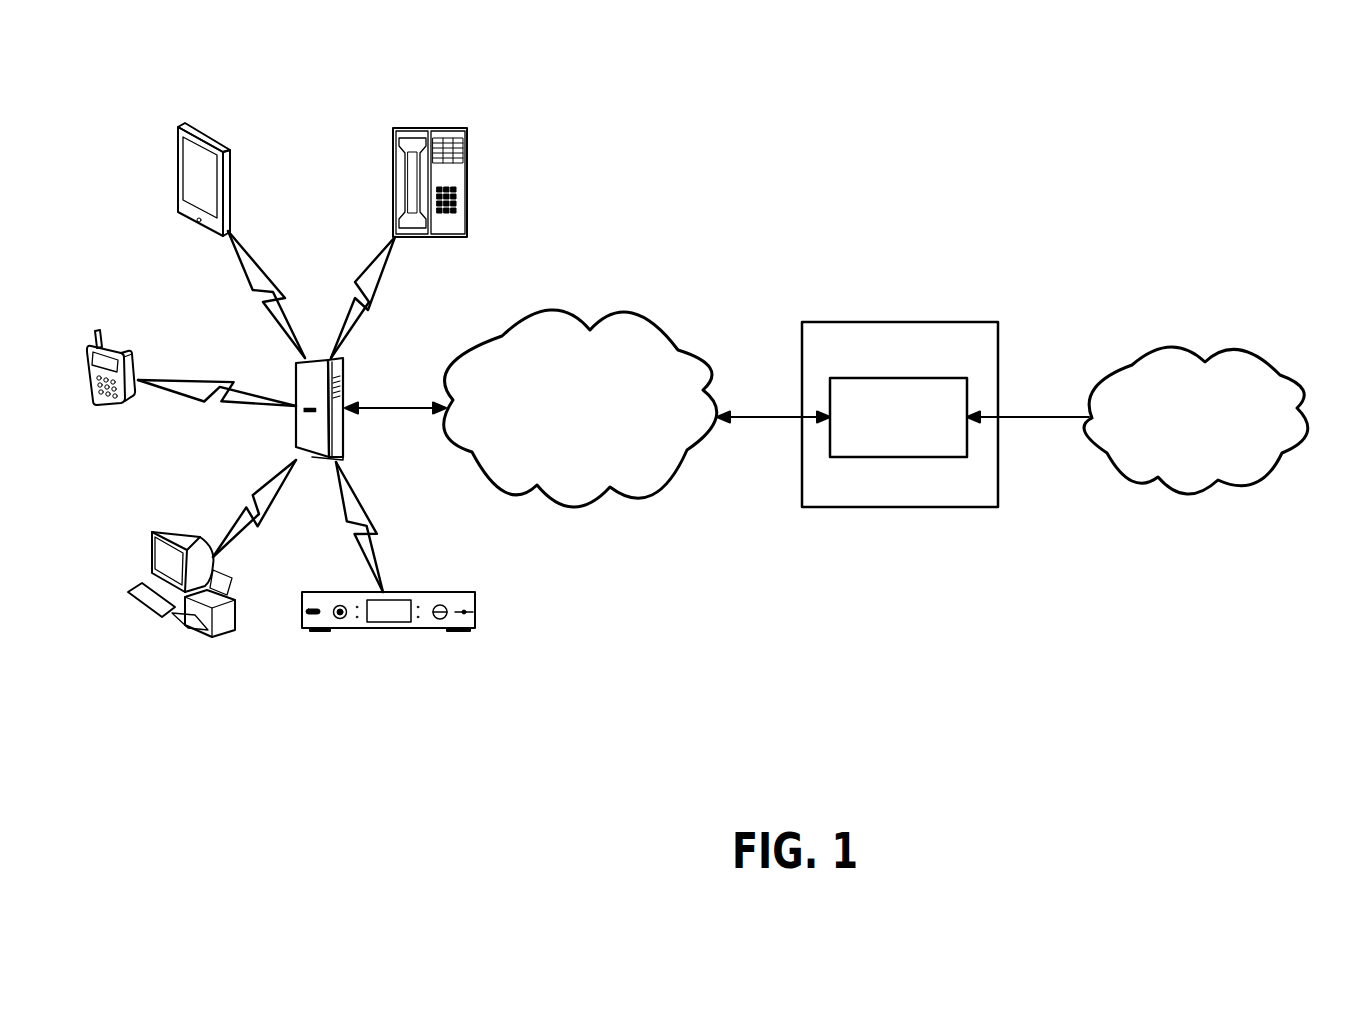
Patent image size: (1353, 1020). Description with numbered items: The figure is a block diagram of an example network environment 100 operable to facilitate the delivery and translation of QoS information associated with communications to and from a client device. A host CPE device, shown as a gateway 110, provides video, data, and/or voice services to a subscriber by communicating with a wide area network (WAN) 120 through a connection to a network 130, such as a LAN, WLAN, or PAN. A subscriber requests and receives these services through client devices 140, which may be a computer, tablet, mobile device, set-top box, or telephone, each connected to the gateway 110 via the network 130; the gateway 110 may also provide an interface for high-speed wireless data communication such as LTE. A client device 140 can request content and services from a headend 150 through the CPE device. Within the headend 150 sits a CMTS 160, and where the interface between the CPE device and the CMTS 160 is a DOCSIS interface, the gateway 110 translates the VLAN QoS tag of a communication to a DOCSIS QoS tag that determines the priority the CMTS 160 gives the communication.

The network environment 100 is at (1183, 686).
The gateway 110 is at (343, 358).
The wide area network (WAN) 120 is at (1122, 482).
The network 130 is at (522, 492).
The client device 140 is at (215, 137).
The headend 150 is at (900, 414).
The CMTS 160 is at (903, 457).